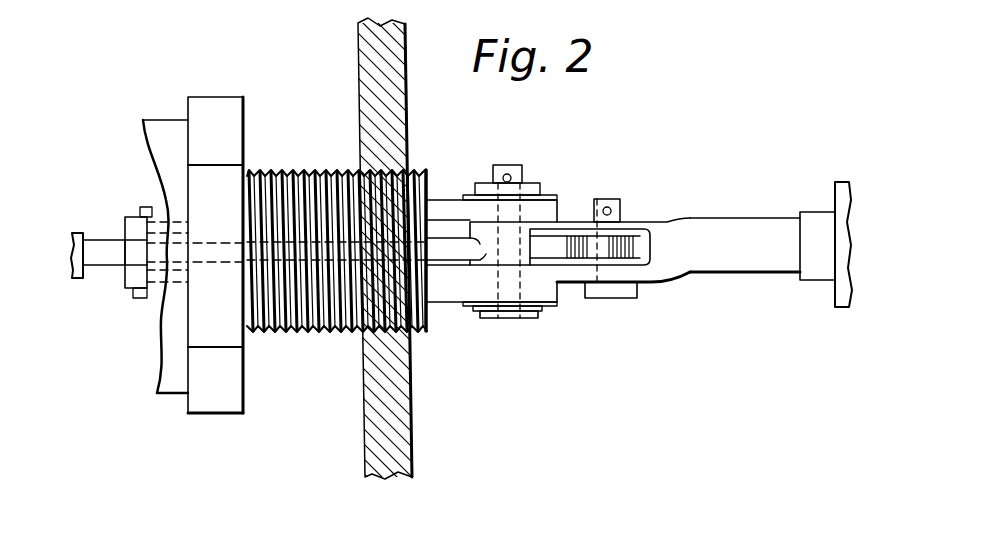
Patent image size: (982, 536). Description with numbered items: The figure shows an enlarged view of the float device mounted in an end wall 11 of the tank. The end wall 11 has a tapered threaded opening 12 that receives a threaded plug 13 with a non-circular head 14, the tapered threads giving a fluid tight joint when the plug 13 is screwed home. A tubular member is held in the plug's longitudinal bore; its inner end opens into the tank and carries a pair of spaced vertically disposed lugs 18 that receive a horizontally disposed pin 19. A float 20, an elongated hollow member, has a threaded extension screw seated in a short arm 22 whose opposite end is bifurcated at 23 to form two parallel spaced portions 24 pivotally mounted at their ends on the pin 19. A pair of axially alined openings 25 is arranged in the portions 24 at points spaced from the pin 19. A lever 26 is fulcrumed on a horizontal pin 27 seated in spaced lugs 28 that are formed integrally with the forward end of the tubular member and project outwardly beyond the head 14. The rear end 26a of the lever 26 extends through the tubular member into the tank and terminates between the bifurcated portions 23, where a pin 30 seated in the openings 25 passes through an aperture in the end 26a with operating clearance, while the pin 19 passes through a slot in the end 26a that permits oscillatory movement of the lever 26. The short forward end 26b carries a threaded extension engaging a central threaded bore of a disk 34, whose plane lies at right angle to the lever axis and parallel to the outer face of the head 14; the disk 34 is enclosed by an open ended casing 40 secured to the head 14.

The end wall 11 is at (368, 53).
The threaded opening 12 is at (383, 172).
The threaded plug 13 is at (290, 170).
The non-circular head 14 is at (204, 107).
The lugs 18 is at (447, 205).
The pin 19 is at (510, 169).
The float 20 is at (838, 190).
The short arm 22 is at (768, 258).
The bifurcated end 23 is at (650, 245).
The spaced portions 24 is at (569, 222).
The axially alined openings 25 is at (622, 222).
The lever 26 is at (220, 255).
The rear end of lever 26a is at (455, 262).
The forward end of lever 26b is at (105, 255).
The pin 27 is at (140, 210).
The lugs 28 is at (128, 222).
The pin 30 is at (608, 300).
The disk 34 is at (106, 245).
The casing 40 is at (157, 128).